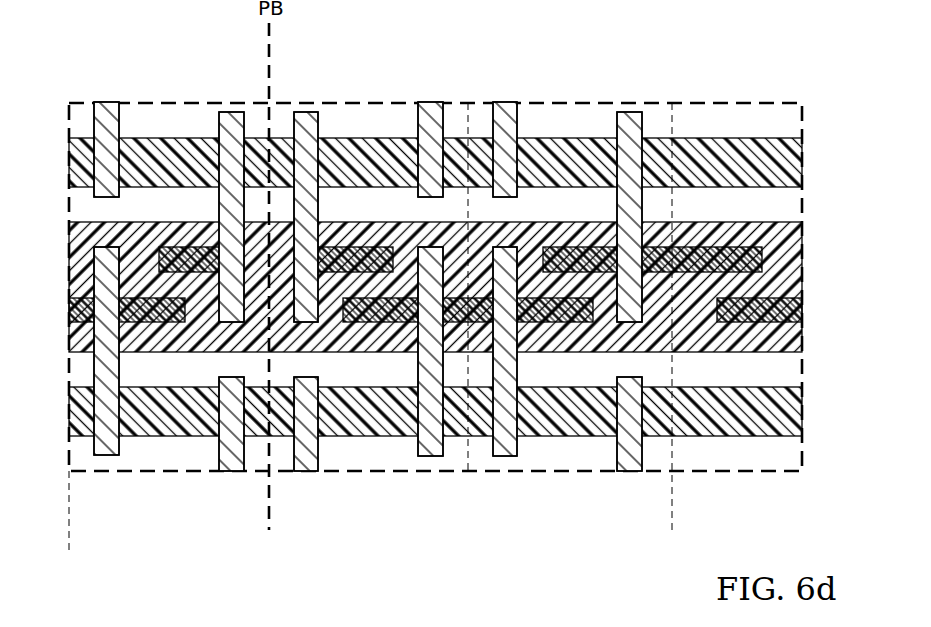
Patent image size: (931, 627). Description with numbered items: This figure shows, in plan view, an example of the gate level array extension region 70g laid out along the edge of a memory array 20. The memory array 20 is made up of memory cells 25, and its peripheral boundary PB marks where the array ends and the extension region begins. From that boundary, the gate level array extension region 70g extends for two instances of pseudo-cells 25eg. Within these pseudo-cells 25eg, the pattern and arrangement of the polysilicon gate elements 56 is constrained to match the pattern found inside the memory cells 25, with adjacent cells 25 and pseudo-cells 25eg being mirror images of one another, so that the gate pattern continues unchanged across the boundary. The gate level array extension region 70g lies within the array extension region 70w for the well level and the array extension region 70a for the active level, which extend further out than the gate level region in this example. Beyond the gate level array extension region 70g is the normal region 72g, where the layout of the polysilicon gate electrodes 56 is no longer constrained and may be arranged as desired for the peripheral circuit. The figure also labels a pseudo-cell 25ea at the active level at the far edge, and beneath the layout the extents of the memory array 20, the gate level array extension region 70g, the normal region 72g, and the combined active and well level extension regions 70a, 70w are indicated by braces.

The polysilicon gate element 56 is at (113, 107).
The memory cell 25 is at (171, 99).
The pseudo-cell 25eg is at (361, 98).
The active-region cell edge 25ea is at (746, 98).
The memory array 20 is at (270, 494).
The gate level array extension region 70g is at (673, 494).
The normal region 72g is at (801, 494).
The array extension region for the active level 70a is at (435, 365).
The array extension region for the well level 70w is at (69, 555).